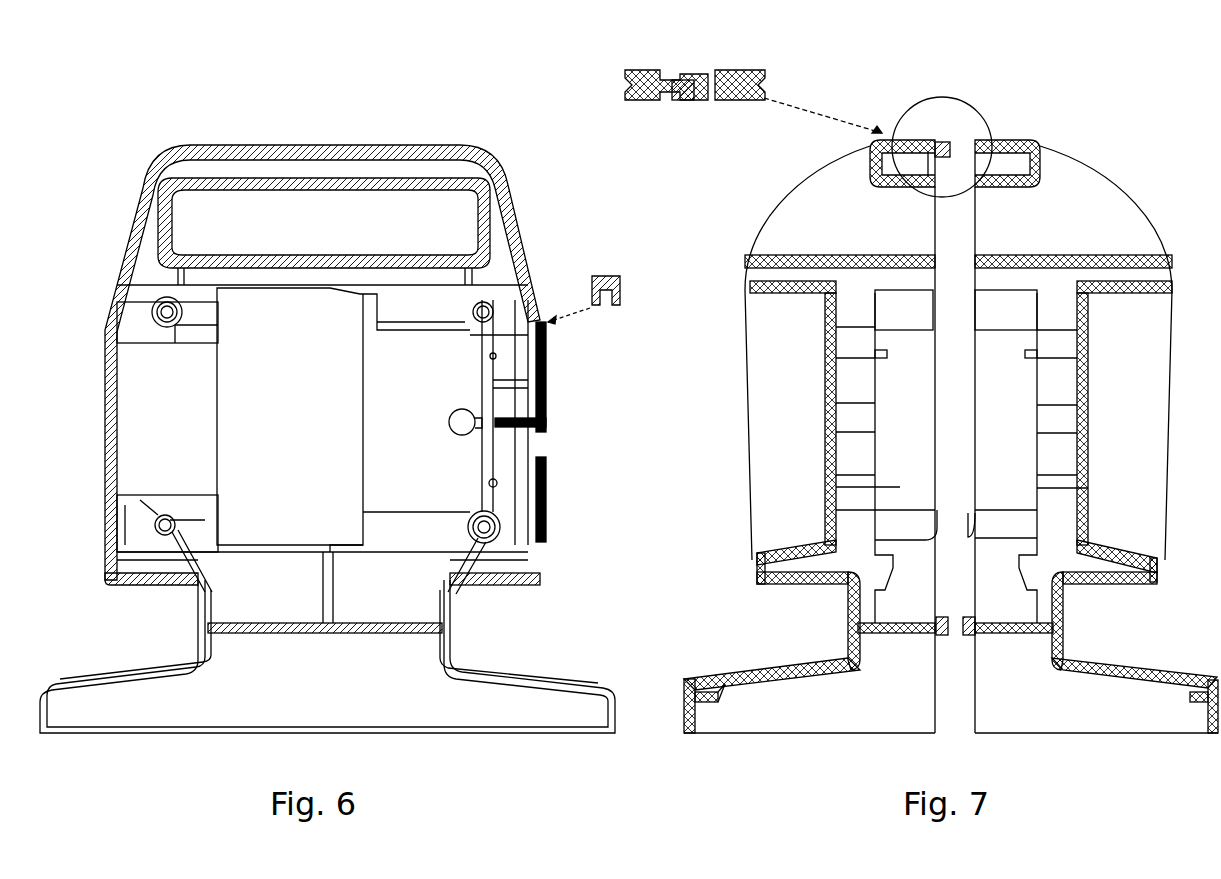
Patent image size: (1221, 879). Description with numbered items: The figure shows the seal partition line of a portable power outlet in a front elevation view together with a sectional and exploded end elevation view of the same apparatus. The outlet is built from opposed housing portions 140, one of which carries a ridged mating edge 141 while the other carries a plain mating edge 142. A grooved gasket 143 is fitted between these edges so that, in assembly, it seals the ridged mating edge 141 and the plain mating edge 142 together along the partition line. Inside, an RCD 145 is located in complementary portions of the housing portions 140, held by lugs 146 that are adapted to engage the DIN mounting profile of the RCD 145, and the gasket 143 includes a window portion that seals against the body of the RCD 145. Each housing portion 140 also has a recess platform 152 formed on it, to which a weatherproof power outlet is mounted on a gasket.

In FIG. 7, the housing portion 140 is at (745, 422).
In FIG. 6, the ridged mating edge 141 is at (584, 300).
In FIG. 7, the ridged mating edge 141 is at (640, 112).
In FIG. 7, the plain mating edge 142 is at (755, 70).
In FIG. 7, the grooved gasket 143 is at (690, 132).
In FIG. 6, the RCD 145 is at (350, 418).
In FIG. 7, the lug 146 is at (882, 350).
In FIG. 7, the recess platform 152 is at (830, 530).